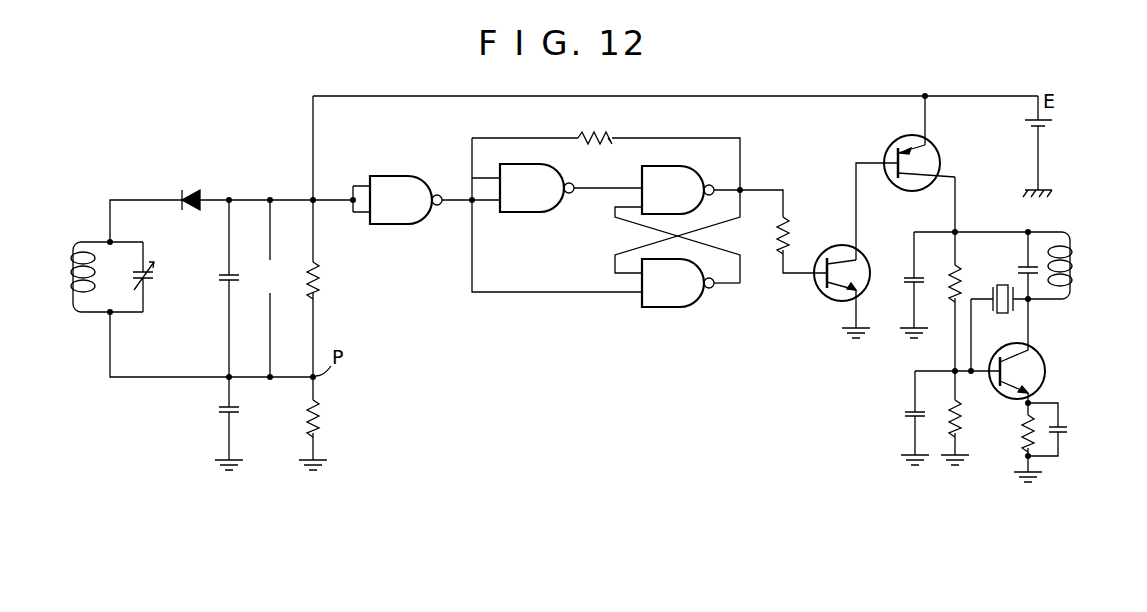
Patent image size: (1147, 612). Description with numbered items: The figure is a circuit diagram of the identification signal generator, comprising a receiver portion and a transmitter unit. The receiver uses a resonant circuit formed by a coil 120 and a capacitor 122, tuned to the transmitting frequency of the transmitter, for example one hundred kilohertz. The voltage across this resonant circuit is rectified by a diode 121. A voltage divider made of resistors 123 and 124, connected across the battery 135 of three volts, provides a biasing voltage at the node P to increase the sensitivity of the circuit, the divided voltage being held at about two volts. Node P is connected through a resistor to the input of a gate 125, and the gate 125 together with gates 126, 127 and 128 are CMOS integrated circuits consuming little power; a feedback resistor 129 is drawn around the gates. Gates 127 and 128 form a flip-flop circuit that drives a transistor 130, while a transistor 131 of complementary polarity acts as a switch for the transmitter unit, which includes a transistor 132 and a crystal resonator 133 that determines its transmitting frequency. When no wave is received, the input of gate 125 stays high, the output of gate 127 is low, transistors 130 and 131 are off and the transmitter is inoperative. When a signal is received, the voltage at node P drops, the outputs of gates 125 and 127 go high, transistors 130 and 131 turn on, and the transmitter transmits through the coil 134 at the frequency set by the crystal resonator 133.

The coil 120 is at (72, 277).
The diode 121 is at (189, 190).
The capacitor 122 is at (150, 276).
The resistor 123 is at (320, 276).
The resistor 124 is at (320, 410).
The gate 125 is at (395, 176).
The gate 126 is at (520, 212).
The gate 127 is at (688, 166).
The gate 128 is at (672, 307).
The feedback resistor 129 is at (592, 140).
The transistor 130 is at (842, 245).
The transistor 131 is at (892, 184).
The transistor 132 is at (1040, 355).
The crystal resonator 133 is at (1002, 285).
The coil 134 is at (1072, 262).
The battery 135 is at (1056, 126).